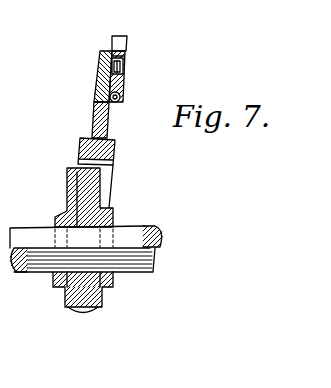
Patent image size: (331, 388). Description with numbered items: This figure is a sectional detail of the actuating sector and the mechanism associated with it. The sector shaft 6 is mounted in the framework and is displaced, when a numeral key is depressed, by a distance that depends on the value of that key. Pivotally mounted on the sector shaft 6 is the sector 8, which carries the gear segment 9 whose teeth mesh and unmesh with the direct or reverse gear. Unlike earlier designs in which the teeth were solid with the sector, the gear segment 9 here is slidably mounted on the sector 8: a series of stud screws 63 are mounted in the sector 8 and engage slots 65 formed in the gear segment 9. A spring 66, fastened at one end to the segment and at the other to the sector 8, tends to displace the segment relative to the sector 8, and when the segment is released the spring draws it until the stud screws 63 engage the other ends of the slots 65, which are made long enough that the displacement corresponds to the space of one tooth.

The sector shaft 6 is at (133, 236).
The sector 8 is at (99, 80).
The gear segment 9 is at (127, 48).
The stud screws 63 is at (125, 63).
The slots 65 is at (123, 58).
The spring 66 is at (121, 97).